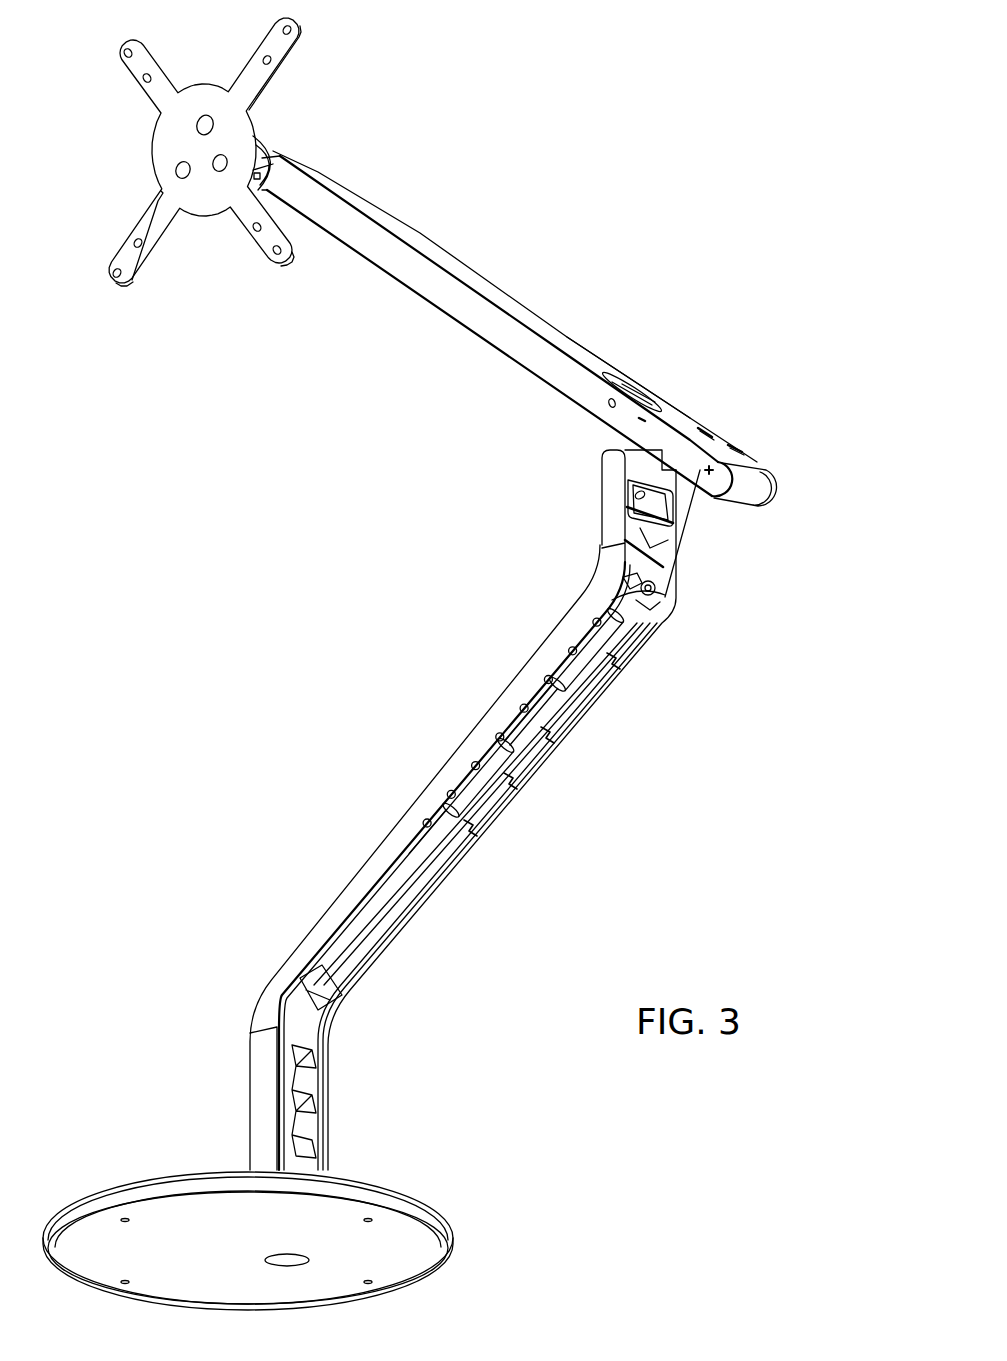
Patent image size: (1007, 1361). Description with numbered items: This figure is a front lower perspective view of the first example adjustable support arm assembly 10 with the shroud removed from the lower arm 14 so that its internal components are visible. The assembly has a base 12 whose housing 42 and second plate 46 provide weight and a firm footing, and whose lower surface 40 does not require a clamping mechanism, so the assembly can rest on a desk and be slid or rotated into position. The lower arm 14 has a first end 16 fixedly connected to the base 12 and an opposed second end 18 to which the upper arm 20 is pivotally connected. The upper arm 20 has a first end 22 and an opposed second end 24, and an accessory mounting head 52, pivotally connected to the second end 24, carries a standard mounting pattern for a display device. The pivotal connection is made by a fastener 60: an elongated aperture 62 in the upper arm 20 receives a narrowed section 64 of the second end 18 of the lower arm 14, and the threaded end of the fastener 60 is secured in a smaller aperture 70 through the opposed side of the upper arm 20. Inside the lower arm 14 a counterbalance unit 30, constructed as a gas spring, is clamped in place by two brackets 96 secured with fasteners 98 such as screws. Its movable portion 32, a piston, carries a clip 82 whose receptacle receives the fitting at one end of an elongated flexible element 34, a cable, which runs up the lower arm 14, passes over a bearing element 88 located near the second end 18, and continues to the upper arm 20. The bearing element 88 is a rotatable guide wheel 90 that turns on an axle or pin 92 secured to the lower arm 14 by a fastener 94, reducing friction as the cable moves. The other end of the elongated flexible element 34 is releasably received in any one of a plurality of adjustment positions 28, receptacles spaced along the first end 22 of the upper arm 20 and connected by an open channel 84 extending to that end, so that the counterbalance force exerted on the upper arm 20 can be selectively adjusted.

The adjustable support arm assembly 10 is at (737, 143).
The base 12 is at (286, 1204).
The lower arm 14 is at (453, 810).
The first end of the lower arm 16 is at (260, 1157).
The second end of the lower arm 18 is at (607, 480).
The upper arm 20 is at (543, 368).
The first end of the upper arm 22 is at (773, 457).
The second end of the upper arm 24 is at (316, 172).
The adjustment positions 28 is at (751, 453).
The counterbalance unit 30 is at (545, 712).
The movable portion 32 is at (392, 897).
The elongated flexible element 34 is at (394, 946).
The lower surface 40 is at (209, 1251).
The housing 42 is at (437, 1214).
The second plate 46 is at (405, 1255).
The accessory mounting head 52 is at (280, 137).
The fastener 60 is at (604, 413).
The elongated aperture 62 is at (617, 378).
The narrowed section 64 is at (620, 440).
The smaller aperture 70 is at (606, 403).
The clip 82 is at (348, 983).
The open channel 84 is at (762, 508).
The bearing element 88 is at (658, 592).
The guide wheel 90 is at (662, 606).
The axle or pin 92 is at (623, 584).
The fastener 94 is at (612, 598).
The brackets 96 is at (606, 663).
The fasteners 98 is at (568, 654).